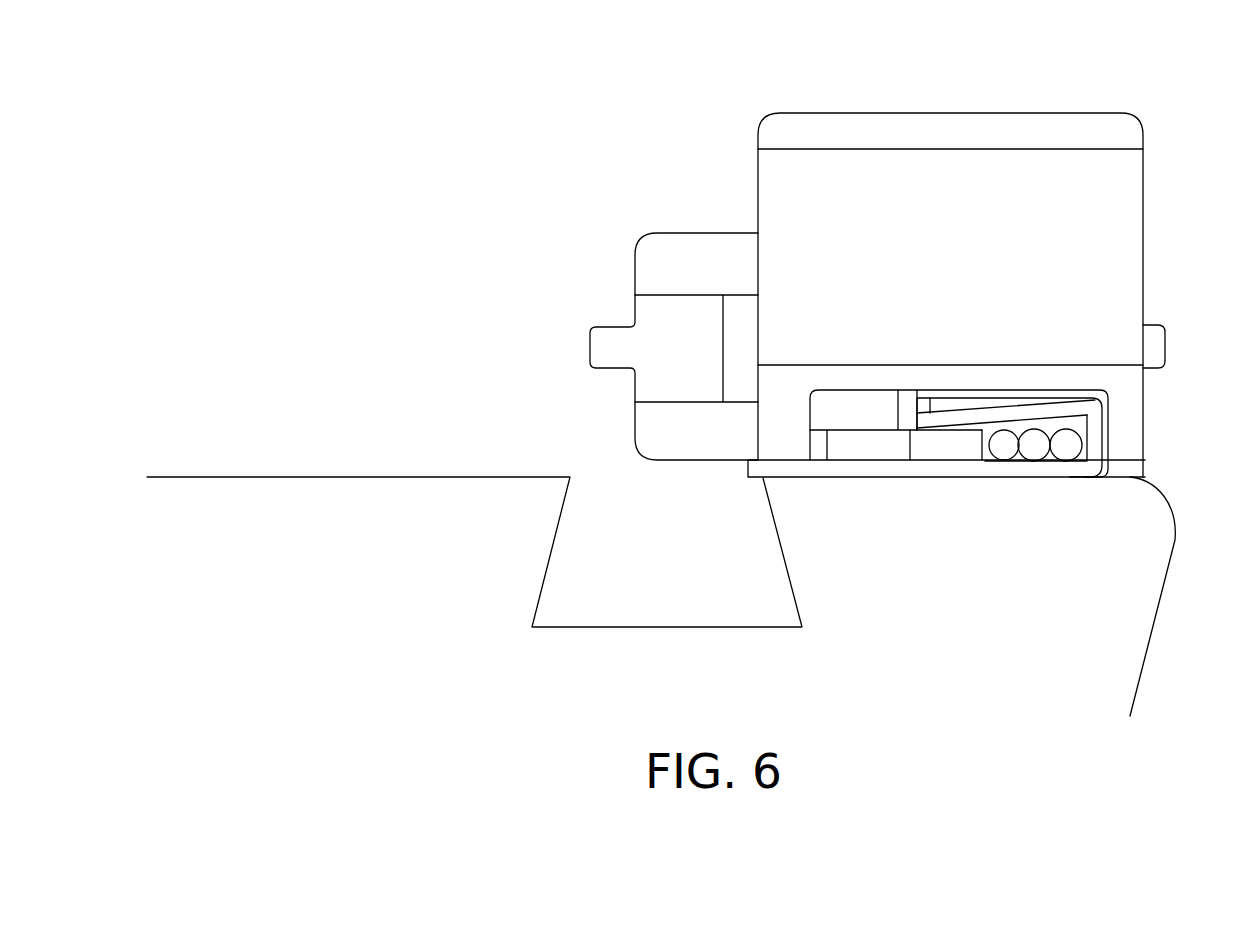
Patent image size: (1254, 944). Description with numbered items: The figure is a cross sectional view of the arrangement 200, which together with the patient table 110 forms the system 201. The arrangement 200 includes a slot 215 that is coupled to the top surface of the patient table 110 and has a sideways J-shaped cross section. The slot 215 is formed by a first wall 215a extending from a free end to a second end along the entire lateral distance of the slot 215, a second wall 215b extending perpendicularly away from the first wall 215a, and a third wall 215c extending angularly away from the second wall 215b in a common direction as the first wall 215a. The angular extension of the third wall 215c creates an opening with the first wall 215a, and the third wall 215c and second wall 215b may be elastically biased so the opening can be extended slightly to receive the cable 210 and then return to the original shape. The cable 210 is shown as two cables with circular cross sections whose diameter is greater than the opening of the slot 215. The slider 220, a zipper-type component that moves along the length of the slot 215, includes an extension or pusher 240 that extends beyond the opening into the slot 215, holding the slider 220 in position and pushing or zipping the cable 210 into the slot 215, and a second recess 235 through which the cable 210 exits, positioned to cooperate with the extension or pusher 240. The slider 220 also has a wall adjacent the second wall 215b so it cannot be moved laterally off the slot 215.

The arrangement 200 is at (600, 133).
The system 201 is at (200, 389).
The patient table 110 is at (322, 510).
The slider 220 is at (1124, 190).
The second recess 235 is at (852, 410).
The third wall 215c is at (982, 405).
The second wall 215b is at (1098, 430).
The extension or pusher 240 is at (866, 453).
The first wall 215a is at (928, 465).
The slot 215 is at (1000, 465).
The cable 210 is at (1067, 452).